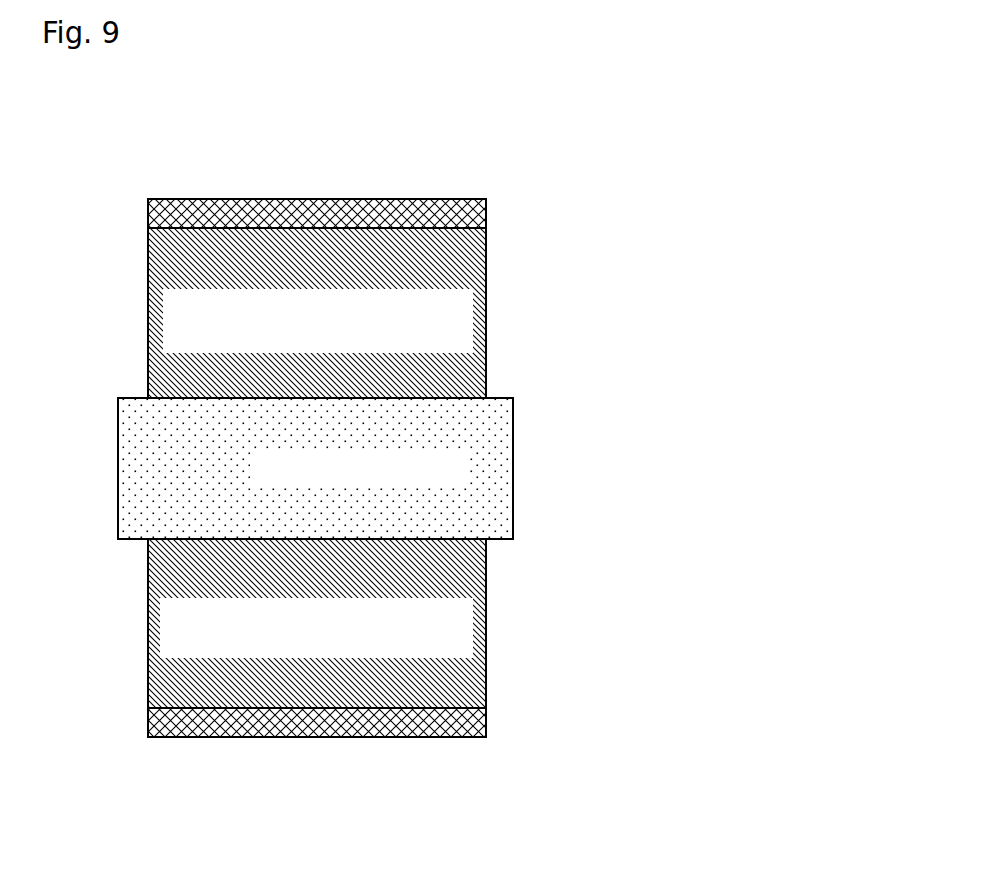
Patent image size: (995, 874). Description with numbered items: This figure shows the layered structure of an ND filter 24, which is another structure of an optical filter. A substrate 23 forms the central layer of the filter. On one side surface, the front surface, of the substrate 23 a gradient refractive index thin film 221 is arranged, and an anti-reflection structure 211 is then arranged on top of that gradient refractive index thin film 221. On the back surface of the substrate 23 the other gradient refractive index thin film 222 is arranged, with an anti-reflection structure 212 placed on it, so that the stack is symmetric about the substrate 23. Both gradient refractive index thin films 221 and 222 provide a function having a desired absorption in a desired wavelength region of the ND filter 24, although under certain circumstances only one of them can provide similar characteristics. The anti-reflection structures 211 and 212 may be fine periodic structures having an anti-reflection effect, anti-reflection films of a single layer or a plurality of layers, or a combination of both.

The ND filter 24 is at (458, 504).
The anti-reflection structure 211 is at (492, 181).
The gradient refractive index thin film 221 is at (317, 313).
The substrate 23 is at (315, 468).
The gradient refractive index thin film 222 is at (317, 623).
The anti-reflection structure 212 is at (488, 732).